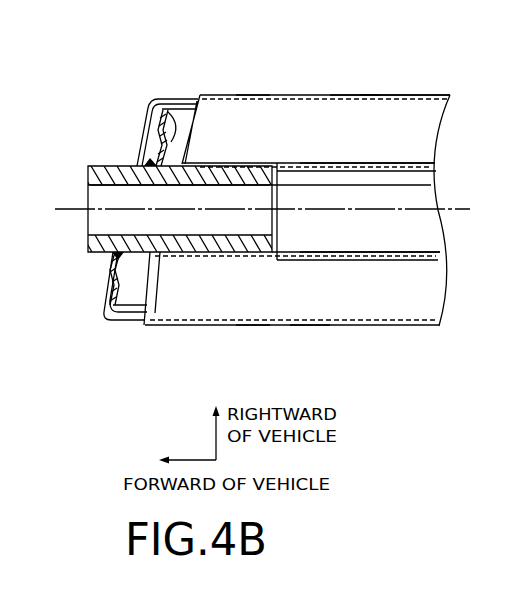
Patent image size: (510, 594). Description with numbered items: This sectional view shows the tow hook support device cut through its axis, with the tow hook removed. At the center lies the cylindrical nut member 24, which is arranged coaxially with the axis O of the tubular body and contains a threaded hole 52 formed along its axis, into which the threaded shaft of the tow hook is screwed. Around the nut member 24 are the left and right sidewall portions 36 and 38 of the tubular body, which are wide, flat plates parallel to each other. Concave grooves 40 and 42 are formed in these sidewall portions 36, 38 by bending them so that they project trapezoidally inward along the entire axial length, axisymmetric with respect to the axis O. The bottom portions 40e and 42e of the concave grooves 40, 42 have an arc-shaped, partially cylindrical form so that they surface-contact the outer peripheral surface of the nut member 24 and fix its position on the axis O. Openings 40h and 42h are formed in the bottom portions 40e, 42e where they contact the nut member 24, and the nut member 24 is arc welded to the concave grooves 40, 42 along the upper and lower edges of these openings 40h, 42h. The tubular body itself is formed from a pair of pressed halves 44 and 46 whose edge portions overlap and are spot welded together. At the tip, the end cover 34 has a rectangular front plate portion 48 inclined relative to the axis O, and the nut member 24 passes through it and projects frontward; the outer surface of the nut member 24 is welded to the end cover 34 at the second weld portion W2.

The nut member 24 is at (113, 167).
The end cover 34 is at (137, 103).
The sidewall portion 36 is at (308, 322).
The sidewall portion 38 is at (352, 96).
The concave groove 40 is at (387, 309).
The bottom portion 40e is at (420, 260).
The opening 40h is at (253, 256).
The concave groove 42 is at (300, 118).
The bottom portion 42e is at (403, 162).
The opening 42h is at (253, 163).
The half 44 is at (206, 342).
The half 46 is at (382, 85).
The front plate portion 48 is at (175, 108).
The threaded hole 52 is at (103, 196).
The axis O is at (250, 210).
The second weld portion W2 is at (147, 163).